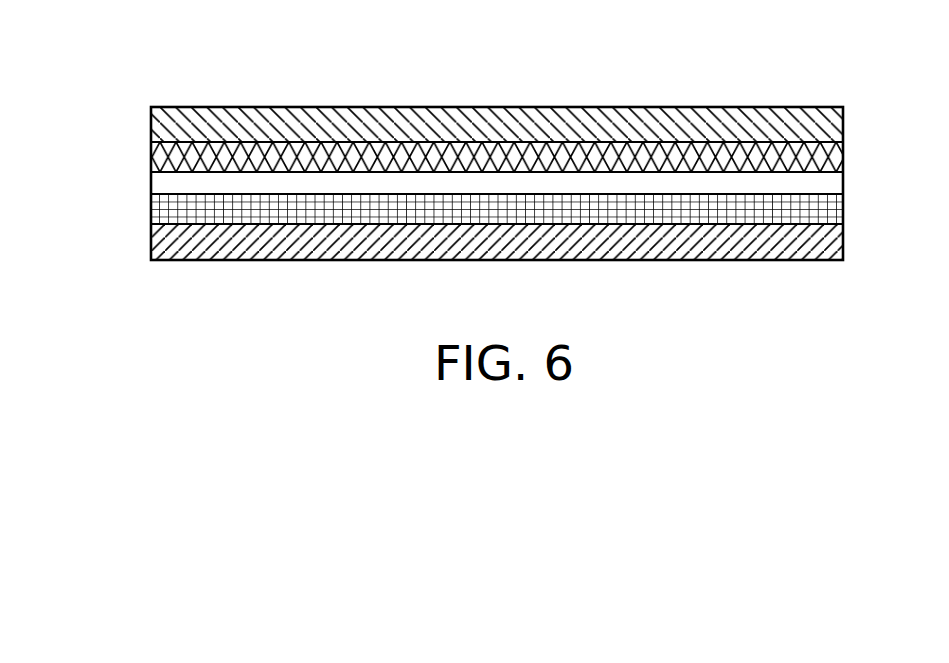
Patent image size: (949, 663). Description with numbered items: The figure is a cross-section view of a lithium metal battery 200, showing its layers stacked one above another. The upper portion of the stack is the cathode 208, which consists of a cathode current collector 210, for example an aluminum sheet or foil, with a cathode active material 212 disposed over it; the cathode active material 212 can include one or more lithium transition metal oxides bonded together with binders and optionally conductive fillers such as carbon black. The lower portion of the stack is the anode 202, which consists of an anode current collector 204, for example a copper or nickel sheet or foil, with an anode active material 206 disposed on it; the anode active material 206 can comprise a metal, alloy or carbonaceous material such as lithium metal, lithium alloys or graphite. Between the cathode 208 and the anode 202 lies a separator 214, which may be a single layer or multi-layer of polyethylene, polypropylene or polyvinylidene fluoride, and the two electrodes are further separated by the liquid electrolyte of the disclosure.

The lithium metal battery 200 is at (487, 147).
The anode 202 is at (491, 230).
The anode current collector 204 is at (835, 250).
The anode active material 206 is at (834, 216).
The cathode 208 is at (491, 140).
The cathode current collector 210 is at (835, 126).
The cathode active material 212 is at (835, 158).
The separator 214 is at (835, 188).